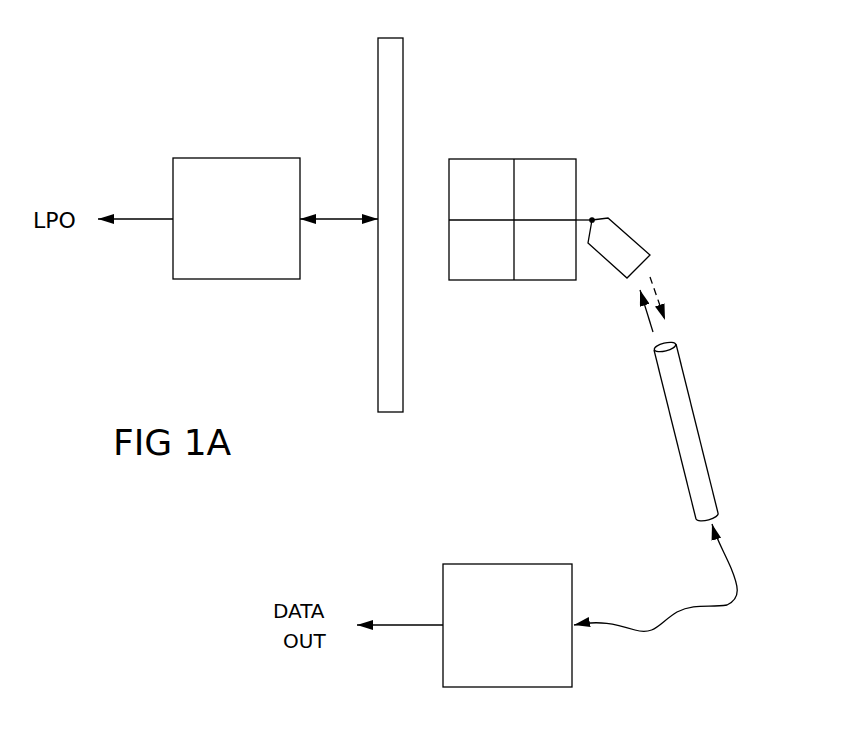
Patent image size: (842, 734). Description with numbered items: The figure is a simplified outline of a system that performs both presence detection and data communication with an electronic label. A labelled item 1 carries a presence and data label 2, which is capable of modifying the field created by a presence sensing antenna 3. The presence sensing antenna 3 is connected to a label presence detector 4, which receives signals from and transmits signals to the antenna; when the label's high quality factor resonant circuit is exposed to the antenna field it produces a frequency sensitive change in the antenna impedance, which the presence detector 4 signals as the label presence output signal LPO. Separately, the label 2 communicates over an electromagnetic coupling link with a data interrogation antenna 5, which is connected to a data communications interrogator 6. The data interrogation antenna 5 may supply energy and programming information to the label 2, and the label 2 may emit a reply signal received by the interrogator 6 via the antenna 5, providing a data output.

The labelled item 1 is at (527, 159).
The electronic label 2 is at (606, 218).
The presence sensing antenna 3 is at (390, 38).
The label presence detector 4 is at (218, 158).
The data interrogation antenna 5 is at (685, 375).
The data communications interrogator 6 is at (483, 564).